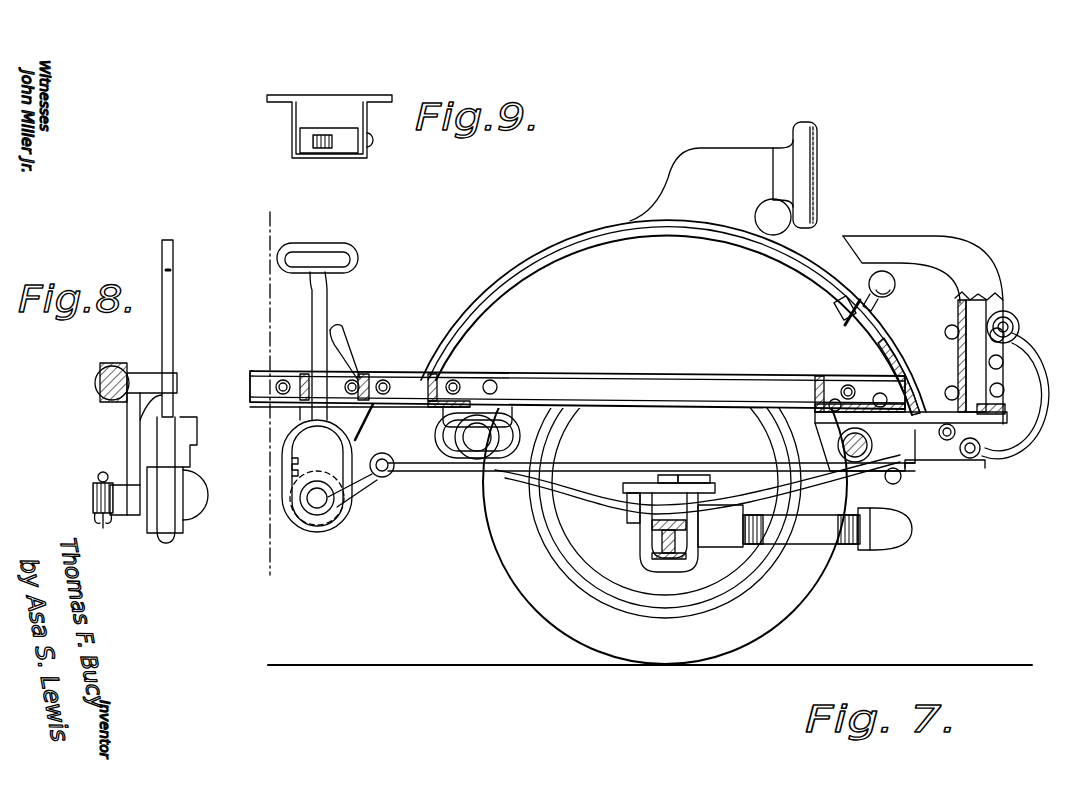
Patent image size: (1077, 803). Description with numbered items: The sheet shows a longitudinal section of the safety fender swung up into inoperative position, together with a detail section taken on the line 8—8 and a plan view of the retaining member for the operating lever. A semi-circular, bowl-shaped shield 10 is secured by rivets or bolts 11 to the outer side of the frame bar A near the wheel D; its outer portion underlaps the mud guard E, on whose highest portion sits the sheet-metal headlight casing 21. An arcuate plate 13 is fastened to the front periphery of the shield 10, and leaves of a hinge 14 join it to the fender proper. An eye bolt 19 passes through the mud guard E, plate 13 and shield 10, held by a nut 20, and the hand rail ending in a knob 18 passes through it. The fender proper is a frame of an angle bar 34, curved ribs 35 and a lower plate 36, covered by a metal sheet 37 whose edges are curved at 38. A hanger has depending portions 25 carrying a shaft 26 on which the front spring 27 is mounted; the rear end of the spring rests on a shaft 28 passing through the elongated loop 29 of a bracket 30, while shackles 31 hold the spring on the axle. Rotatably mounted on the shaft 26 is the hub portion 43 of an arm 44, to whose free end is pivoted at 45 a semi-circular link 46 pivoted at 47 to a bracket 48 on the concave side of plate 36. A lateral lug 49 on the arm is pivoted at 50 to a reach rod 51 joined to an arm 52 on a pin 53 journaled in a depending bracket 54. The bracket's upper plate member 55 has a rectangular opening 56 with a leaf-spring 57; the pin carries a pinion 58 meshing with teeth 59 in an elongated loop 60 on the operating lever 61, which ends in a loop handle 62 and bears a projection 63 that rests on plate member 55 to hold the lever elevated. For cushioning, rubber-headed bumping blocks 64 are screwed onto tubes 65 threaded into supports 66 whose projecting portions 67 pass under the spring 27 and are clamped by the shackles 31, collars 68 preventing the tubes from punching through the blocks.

In FIG. 7, the section line 8 is at (255, 391).
In FIG. 7, the shield 10 is at (665, 469).
In FIG. 7, the rivets or bolts 11 is at (458, 385).
In FIG. 7, the plate 13 is at (882, 355).
In FIG. 7, the hinge 14 is at (945, 425).
In FIG. 7, the knob 18 is at (896, 292).
In FIG. 7, the eye bolt 19 is at (868, 302).
In FIG. 7, the nut 20 is at (838, 308).
In FIG. 7, the headlight casing 21 is at (735, 172).
In FIG. 7, the depending portion 25 is at (805, 451).
In FIG. 7, the shaft 26 is at (857, 462).
In FIG. 7, the front spring 27 is at (742, 490).
In FIG. 7, the shaft 28 is at (477, 445).
In FIG. 7, the elongated loop 29 is at (518, 440).
In FIG. 7, the bracket 30 is at (513, 408).
In FIG. 7, the shackle 31 is at (645, 548).
In FIG. 7, the angle bar 34 is at (1005, 408).
In FIG. 7, the curved rib 35 is at (966, 358).
In FIG. 7, the plate 36 is at (1004, 388).
In FIG. 7, the metal sheet 37 is at (957, 322).
In FIG. 7, the curved edge 38 is at (858, 258).
In FIG. 7, the hub portion 43 is at (840, 448).
In FIG. 7, the arm 44 is at (935, 455).
In FIG. 7, the pivot 45 is at (975, 458).
In FIG. 7, the semi-circular link 46 is at (1032, 428).
In FIG. 7, the pivot 47 is at (1010, 325).
In FIG. 7, the bracket 48 is at (1000, 326).
In FIG. 7, the lateral lug 49 is at (902, 480).
In FIG. 7, the pivot 50 is at (891, 485).
In FIG. 7, the reach rod 51 is at (448, 472).
In FIG. 7, the arm 52 is at (365, 488).
In FIG. 8, the arm 52 is at (192, 455).
In FIG. 7, the pin 53 is at (317, 508).
In FIG. 8, the pin 53 is at (197, 498).
In FIG. 7, the depending bracket 54 is at (355, 422).
In FIG. 8, the depending bracket 54 is at (127, 435).
In FIG. 9, the depending bracket 54 is at (320, 93).
In FIG. 7, the plate member 55 is at (348, 385).
In FIG. 8, the plate member 55 is at (178, 385).
In FIG. 9, the plate member 55 is at (308, 113).
In FIG. 7, the rectangular opening 56 is at (362, 380).
In FIG. 9, the rectangular opening 56 is at (305, 143).
In FIG. 7, the leaf-spring 57 is at (350, 356).
In FIG. 9, the leaf-spring 57 is at (325, 150).
In FIG. 7, the pinion 58 is at (300, 525).
In FIG. 7, the teeth 59 is at (300, 462).
In FIG. 7, the elongated loop 60 is at (290, 437).
In FIG. 8, the elongated loop 60 is at (165, 540).
In FIG. 7, the operating lever 61 is at (332, 297).
In FIG. 8, the operating lever 61 is at (174, 310).
In FIG. 7, the loop handle 62 is at (357, 250).
In FIG. 8, the loop handle 62 is at (162, 245).
In FIG. 7, the projection 63 is at (307, 374).
In FIG. 8, the projection 63 is at (173, 365).
In FIG. 7, the bumping block 64 is at (900, 543).
In FIG. 7, the tube 65 is at (801, 529).
In FIG. 7, the support 66 is at (720, 526).
In FIG. 7, the projecting portion 67 is at (627, 510).
In FIG. 7, the collar 68 is at (862, 552).
In FIG. 7, the side sill A is at (636, 385).
In FIG. 8, the side sill A is at (100, 368).
In FIG. 7, the wheel D is at (660, 668).
In FIG. 7, the mud guard E is at (580, 232).